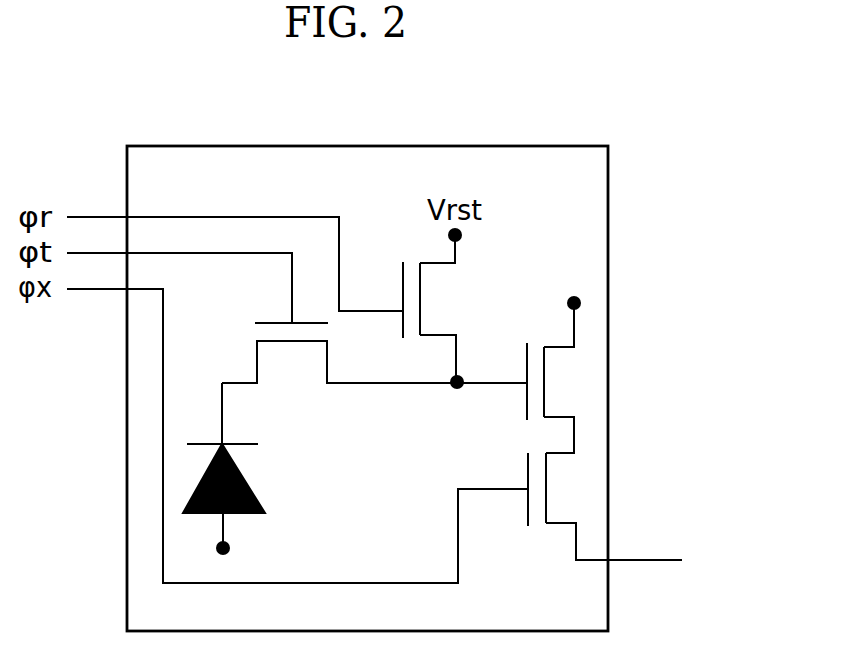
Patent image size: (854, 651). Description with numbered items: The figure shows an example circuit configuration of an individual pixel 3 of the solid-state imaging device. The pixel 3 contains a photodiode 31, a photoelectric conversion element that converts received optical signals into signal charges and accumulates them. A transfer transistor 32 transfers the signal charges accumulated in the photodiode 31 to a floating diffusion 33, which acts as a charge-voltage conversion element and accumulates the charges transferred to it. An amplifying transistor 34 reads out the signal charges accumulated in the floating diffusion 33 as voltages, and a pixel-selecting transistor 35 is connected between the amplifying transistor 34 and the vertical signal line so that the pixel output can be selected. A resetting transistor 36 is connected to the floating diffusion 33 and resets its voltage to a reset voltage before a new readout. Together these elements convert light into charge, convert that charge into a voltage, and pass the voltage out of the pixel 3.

The pixel 3 is at (608, 218).
The photodiode 31 is at (250, 482).
The transfer transistor 32 is at (278, 322).
The floating diffusion 33 is at (457, 390).
The amplifying transistor 34 is at (527, 352).
The pixel-selecting transistor 35 is at (525, 510).
The resetting transistor 36 is at (403, 274).